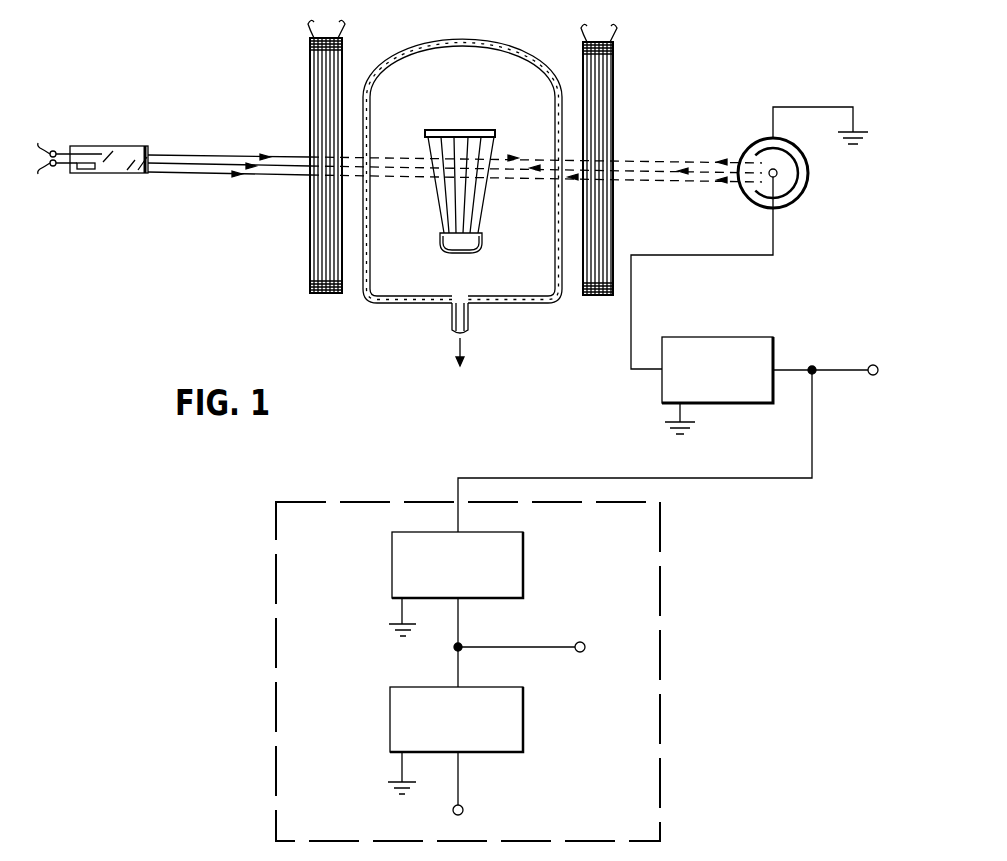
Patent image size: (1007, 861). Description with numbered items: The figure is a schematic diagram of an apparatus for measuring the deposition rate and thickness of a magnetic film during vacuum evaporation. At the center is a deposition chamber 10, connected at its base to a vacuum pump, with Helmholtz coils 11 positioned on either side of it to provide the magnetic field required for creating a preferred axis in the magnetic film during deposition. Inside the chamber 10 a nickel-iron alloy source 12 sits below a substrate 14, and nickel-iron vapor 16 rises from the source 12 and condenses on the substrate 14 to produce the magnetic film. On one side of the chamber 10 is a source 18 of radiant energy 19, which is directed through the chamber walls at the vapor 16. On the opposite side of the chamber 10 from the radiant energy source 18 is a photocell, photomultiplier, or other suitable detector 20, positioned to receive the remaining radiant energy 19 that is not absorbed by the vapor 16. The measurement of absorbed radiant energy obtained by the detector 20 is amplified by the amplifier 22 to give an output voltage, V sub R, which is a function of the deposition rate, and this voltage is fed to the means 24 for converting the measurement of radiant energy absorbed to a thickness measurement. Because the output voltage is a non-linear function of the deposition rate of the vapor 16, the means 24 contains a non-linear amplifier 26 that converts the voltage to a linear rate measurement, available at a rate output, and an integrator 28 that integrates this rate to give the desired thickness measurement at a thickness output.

The deposition chamber 10 is at (523, 53).
The Helmholtz coils 11 is at (318, 82).
The nickel-iron alloy source 12 is at (483, 237).
The substrate 14 is at (470, 133).
The nickel-iron vapor 16 is at (482, 216).
The source of radiant energy 18 is at (122, 150).
The radiant energy 19 is at (508, 155).
The detector 20 is at (808, 193).
The amplifier 22 is at (737, 341).
The means for converting the measurement of radiant energy absorbed to a thickness m 24 is at (275, 620).
The non-linear amplifier 26 is at (392, 557).
The integrator 28 is at (377, 695).